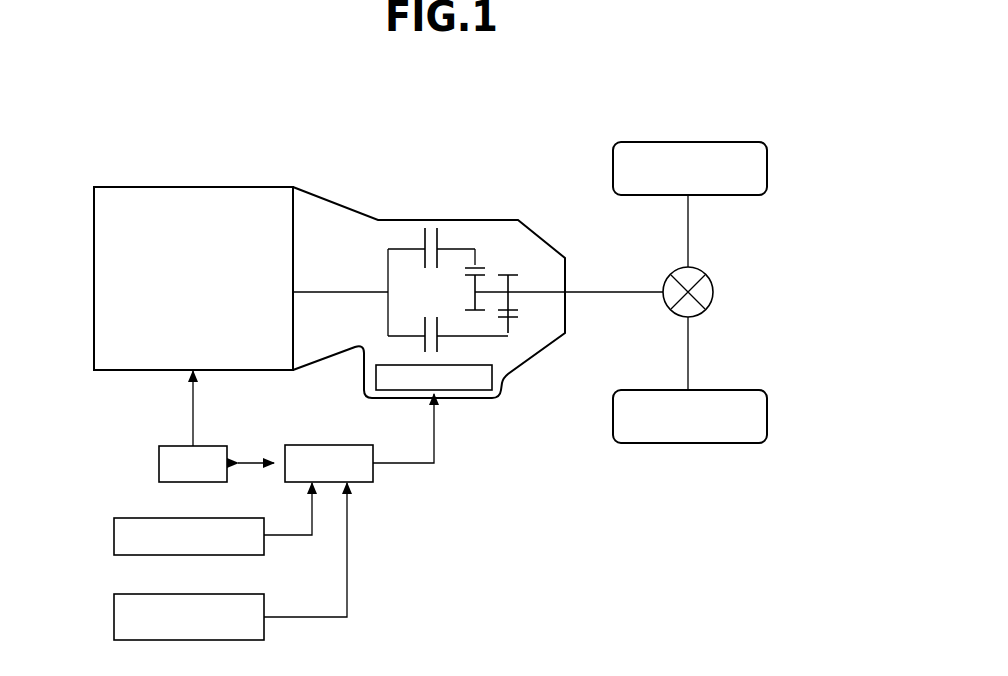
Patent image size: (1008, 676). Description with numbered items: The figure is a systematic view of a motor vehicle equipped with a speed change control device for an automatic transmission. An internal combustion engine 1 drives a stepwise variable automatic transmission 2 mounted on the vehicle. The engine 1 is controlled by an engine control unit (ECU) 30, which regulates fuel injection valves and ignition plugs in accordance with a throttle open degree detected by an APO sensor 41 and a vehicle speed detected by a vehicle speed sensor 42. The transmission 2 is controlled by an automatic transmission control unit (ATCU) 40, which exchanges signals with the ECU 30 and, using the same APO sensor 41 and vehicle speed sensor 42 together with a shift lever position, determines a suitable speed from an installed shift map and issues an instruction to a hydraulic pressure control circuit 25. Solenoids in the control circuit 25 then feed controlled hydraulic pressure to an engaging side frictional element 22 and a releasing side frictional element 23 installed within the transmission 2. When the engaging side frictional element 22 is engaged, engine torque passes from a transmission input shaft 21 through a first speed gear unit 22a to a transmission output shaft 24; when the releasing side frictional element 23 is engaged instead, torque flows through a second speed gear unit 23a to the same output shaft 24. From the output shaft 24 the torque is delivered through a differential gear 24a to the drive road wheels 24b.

The internal combustion engine 1 is at (193, 186).
The automatic transmission 2 is at (339, 192).
The transmission input shaft 21 is at (327, 292).
The engaging side frictional element 22 is at (434, 224).
The first speed gear unit 22a is at (486, 254).
The releasing side frictional element 23 is at (411, 344).
The second speed gear unit 23a is at (522, 329).
The transmission output shaft 24 is at (618, 292).
The differential gear 24a is at (713, 292).
The drive road wheels 24b is at (768, 168).
The hydraulic pressure control circuit 25 is at (467, 396).
The engine control unit (ECU) 30 is at (165, 446).
The automatic transmission control unit (ATCU) 40 is at (290, 445).
The APO sensor 41 is at (114, 535).
The vehicle speed sensor 42 is at (114, 616).